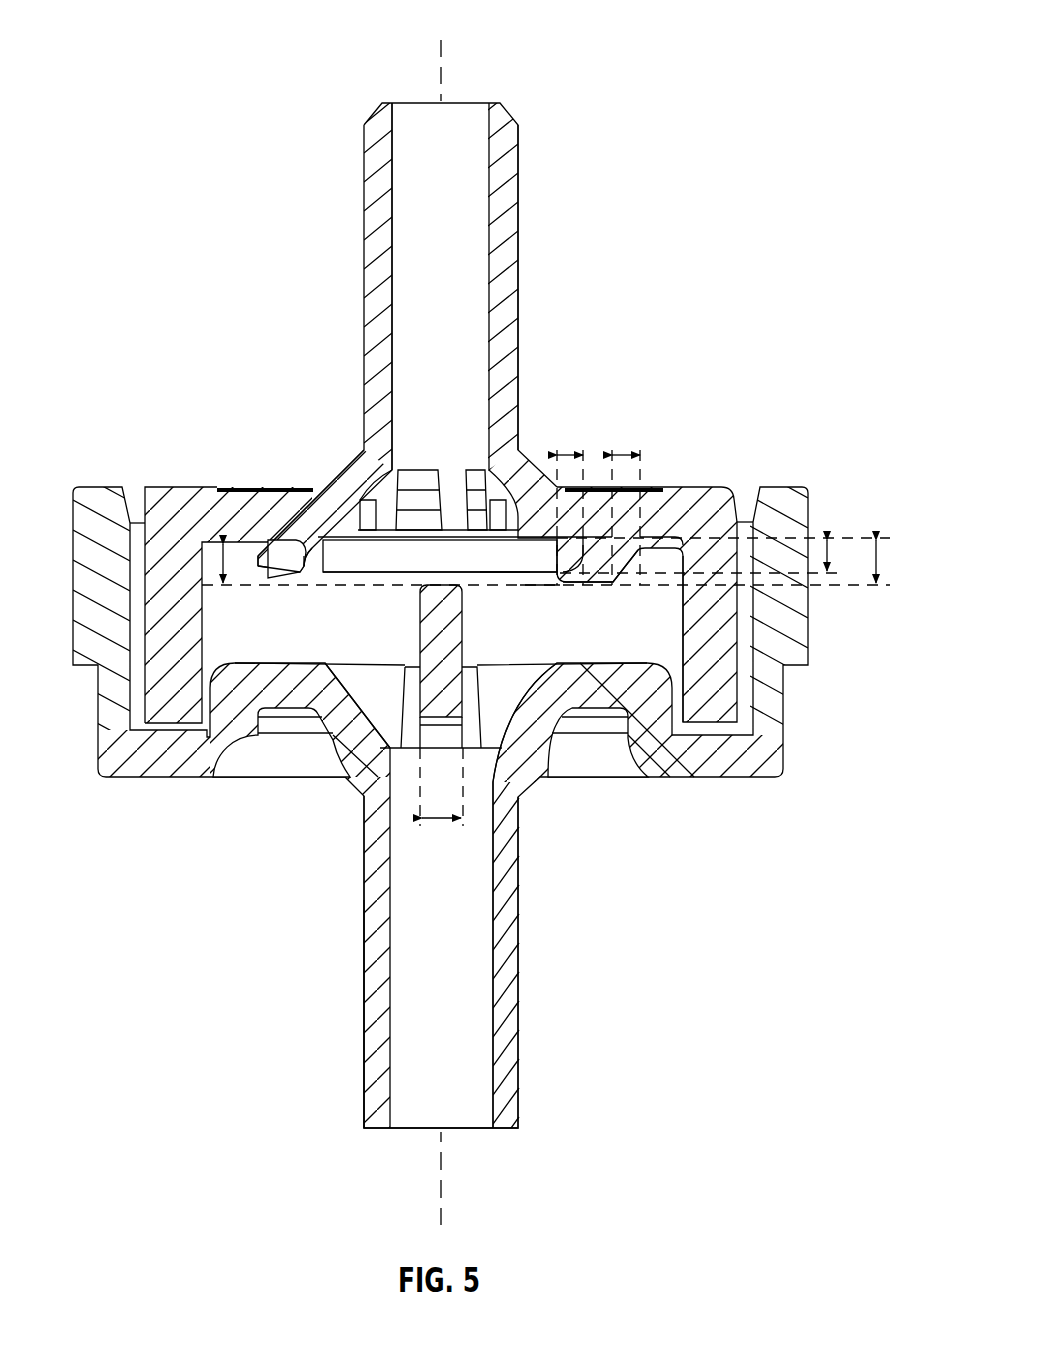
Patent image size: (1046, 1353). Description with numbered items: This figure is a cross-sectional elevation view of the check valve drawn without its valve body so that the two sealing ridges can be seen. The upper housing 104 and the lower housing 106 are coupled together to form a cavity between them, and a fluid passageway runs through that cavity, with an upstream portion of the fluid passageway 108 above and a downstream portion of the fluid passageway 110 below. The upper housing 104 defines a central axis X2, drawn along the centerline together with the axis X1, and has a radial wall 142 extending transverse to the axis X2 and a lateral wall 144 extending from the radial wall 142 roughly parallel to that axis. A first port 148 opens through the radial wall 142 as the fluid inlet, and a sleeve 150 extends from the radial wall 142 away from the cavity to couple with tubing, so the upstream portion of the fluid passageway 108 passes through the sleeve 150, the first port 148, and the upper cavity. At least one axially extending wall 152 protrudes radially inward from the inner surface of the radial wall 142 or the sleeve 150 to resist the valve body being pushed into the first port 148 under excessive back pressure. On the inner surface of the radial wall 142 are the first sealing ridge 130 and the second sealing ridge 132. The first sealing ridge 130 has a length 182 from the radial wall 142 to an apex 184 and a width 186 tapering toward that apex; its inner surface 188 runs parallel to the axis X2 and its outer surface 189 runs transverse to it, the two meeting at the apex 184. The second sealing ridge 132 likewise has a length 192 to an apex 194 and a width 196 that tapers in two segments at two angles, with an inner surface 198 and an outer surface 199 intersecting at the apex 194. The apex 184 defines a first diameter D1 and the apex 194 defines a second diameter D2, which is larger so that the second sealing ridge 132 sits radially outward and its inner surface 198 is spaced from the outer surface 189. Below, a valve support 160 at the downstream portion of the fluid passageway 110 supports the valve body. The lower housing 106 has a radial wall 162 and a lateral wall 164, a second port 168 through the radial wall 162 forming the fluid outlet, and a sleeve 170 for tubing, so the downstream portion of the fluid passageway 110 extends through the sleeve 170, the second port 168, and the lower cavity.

The first axis X1 is at (442, 40).
The central axis X2 is at (442, 80).
The upper housing 104 is at (532, 216).
The lower housing 106 is at (530, 1068).
The upstream portion of the fluid passageway 108 is at (462, 286).
The downstream portion of the fluid passageway 110 is at (470, 930).
The first sealing ridge 130 is at (290, 545).
The second sealing ridge 132 is at (258, 553).
The radial wall 142 is at (692, 506).
The lateral wall 144 is at (792, 670).
The first port 148 is at (376, 492).
The sleeve 150 is at (520, 334).
The axially extending wall 152 is at (455, 490).
The valve support 160 is at (420, 632).
The radial wall 162 is at (585, 655).
The lateral wall 164 is at (784, 708).
The second port 168 is at (345, 735).
The sleeve 170 is at (366, 1010).
The length 182 is at (830, 556).
The apex 184 is at (565, 575).
The width 186 is at (568, 452).
The inner surface 188 is at (366, 560).
The outer surface 189 is at (305, 566).
The length 192 is at (880, 560).
The apex 194 is at (616, 578).
The width 196 is at (626, 452).
The inner surface 198 is at (298, 585).
The outer surface 199 is at (258, 580).
The first diameter D1 is at (504, 576).
The second diameter D2 is at (535, 590).